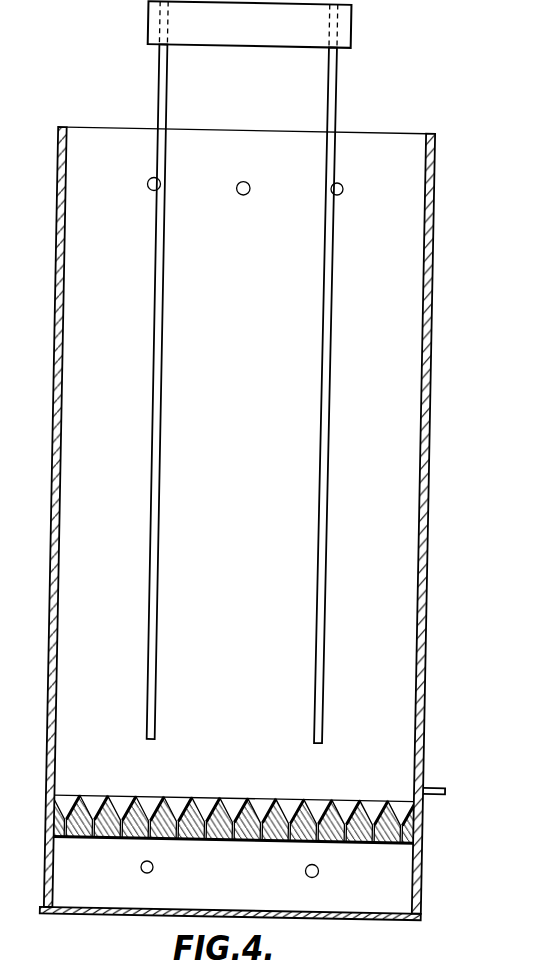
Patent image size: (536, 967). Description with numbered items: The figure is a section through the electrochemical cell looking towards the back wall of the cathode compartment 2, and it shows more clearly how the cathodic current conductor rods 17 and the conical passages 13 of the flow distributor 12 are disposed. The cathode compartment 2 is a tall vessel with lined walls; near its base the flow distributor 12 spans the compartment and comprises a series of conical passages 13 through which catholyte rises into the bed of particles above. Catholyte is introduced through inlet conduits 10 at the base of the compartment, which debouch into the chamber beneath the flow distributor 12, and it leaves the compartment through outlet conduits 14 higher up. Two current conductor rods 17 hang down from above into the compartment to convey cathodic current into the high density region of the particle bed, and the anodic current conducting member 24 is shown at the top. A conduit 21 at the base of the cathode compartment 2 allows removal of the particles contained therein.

The cathode compartment 2 is at (54, 338).
The anodic current conducting member 24 is at (252, 32).
The cathodic current conductor rods 17 is at (163, 96).
The outlet conduits 14 is at (148, 190).
The conical passages 13 is at (208, 810).
The flow distributor 12 is at (193, 834).
The inlet conduits 10 is at (141, 866).
The conduit 21 is at (433, 786).